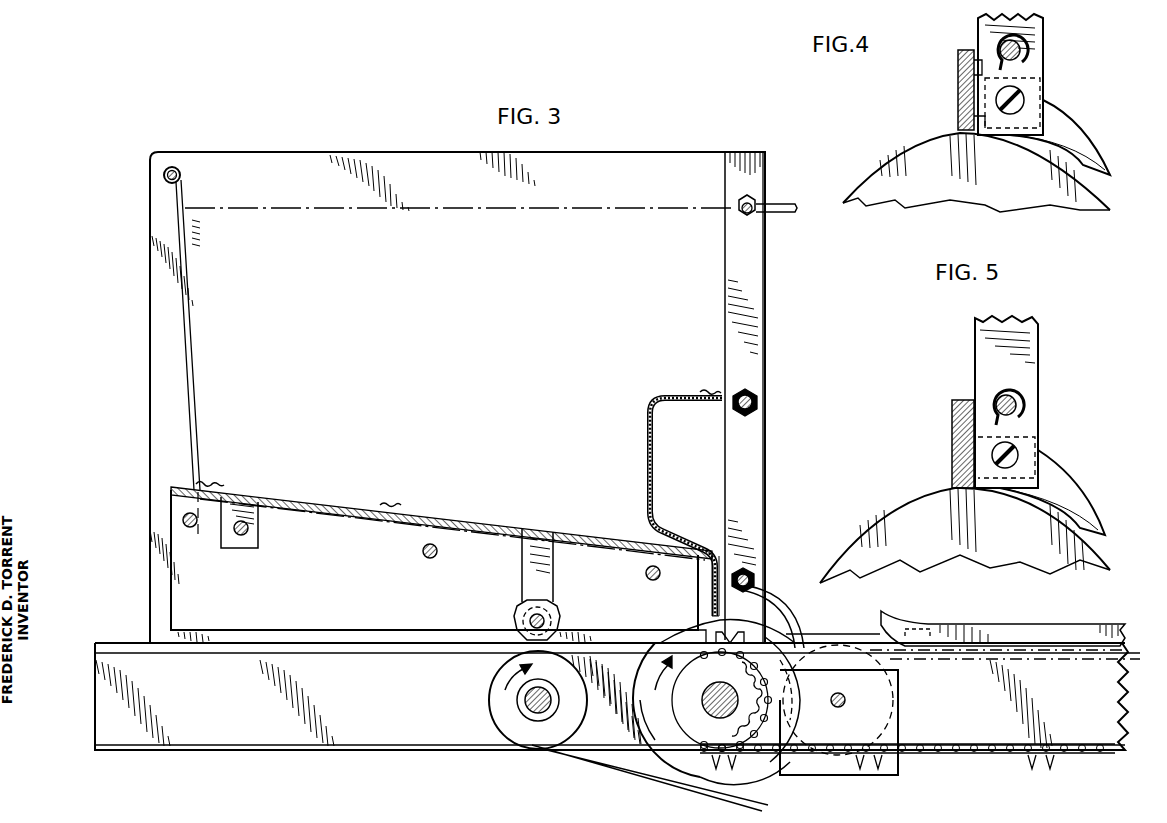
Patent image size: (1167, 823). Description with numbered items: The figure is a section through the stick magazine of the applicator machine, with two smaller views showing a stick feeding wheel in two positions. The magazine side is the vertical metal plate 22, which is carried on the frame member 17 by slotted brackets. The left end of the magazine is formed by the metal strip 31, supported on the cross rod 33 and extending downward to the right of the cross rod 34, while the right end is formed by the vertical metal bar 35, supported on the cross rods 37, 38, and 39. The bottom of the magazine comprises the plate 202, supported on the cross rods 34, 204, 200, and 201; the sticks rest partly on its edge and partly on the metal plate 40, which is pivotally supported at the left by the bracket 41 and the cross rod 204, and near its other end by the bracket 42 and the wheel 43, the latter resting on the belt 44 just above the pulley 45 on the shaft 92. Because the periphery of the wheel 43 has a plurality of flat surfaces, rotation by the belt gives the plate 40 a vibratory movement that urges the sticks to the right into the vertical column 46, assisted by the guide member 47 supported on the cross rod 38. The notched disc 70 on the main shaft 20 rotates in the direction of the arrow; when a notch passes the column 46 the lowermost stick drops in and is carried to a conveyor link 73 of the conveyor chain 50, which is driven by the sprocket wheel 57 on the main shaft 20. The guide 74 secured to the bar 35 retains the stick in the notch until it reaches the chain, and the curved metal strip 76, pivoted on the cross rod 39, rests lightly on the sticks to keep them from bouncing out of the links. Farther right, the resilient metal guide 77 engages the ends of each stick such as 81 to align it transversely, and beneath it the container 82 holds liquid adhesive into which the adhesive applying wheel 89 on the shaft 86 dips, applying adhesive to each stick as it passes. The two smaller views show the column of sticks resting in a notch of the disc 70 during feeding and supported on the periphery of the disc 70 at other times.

In FIG. 3, the frame member 17 is at (240, 735).
In FIG. 3, the main shaft 20 is at (705, 706).
In FIG. 3, the vertical metal plate 22 is at (424, 337).
In FIG. 3, the metal strip 31 is at (201, 420).
In FIG. 3, the cross rod 33 is at (178, 168).
In FIG. 3, the cross rod 34 is at (190, 528).
In FIG. 3, the vertical metal bar 35 is at (752, 486).
In FIG. 4, the vertical metal bar 35 is at (1036, 66).
In FIG. 5, the vertical metal bar 35 is at (1025, 363).
In FIG. 3, the cross rod 37 is at (738, 205).
In FIG. 3, the cross rod 38 is at (755, 398).
In FIG. 3, the cross rod 39 is at (752, 574).
In FIG. 4, the cross rod 39 is at (1025, 48).
In FIG. 5, the cross rod 39 is at (1020, 405).
In FIG. 3, the metal plate 40 is at (366, 518).
In FIG. 4, the metal plate 40 is at (956, 78).
In FIG. 5, the metal plate 40 is at (950, 443).
In FIG. 3, the bracket 41 is at (259, 522).
In FIG. 3, the bracket 42 is at (528, 572).
In FIG. 3, the wheel 43 is at (514, 622).
In FIG. 3, the belt 44 is at (572, 762).
In FIG. 3, the pulley 45 is at (500, 696).
In FIG. 3, the column of sticks 46 is at (710, 586).
In FIG. 3, the guide member 47 is at (655, 492).
In FIG. 3, the conveyor chain 50 is at (962, 754).
In FIG. 3, the sprocket wheel 57 is at (794, 690).
In FIG. 3, the notched disc 70 is at (660, 684).
In FIG. 4, the notched disc 70 is at (895, 158).
In FIG. 5, the notched disc 70 is at (888, 510).
In FIG. 3, the conveyor link 73 is at (698, 635).
In FIG. 3, the guide 74 is at (778, 625).
In FIG. 4, the guide 74 is at (1060, 137).
In FIG. 5, the guide 74 is at (1062, 492).
In FIG. 3, the curved metal strip 76 is at (806, 636).
In FIG. 3, the resilient metal guide 77 is at (853, 626).
In FIG. 3, the stick 81 is at (910, 656).
In FIG. 3, the container 82 is at (898, 726).
In FIG. 3, the shaft 86 is at (844, 706).
In FIG. 3, the adhesive applying wheel 89 is at (895, 698).
In FIG. 3, the shaft 92 is at (527, 706).
In FIG. 3, the cross rod 200 is at (435, 557).
In FIG. 3, the cross rod 201 is at (645, 576).
In FIG. 3, the plate 202 is at (175, 607).
In FIG. 3, the cross rod 204 is at (243, 537).